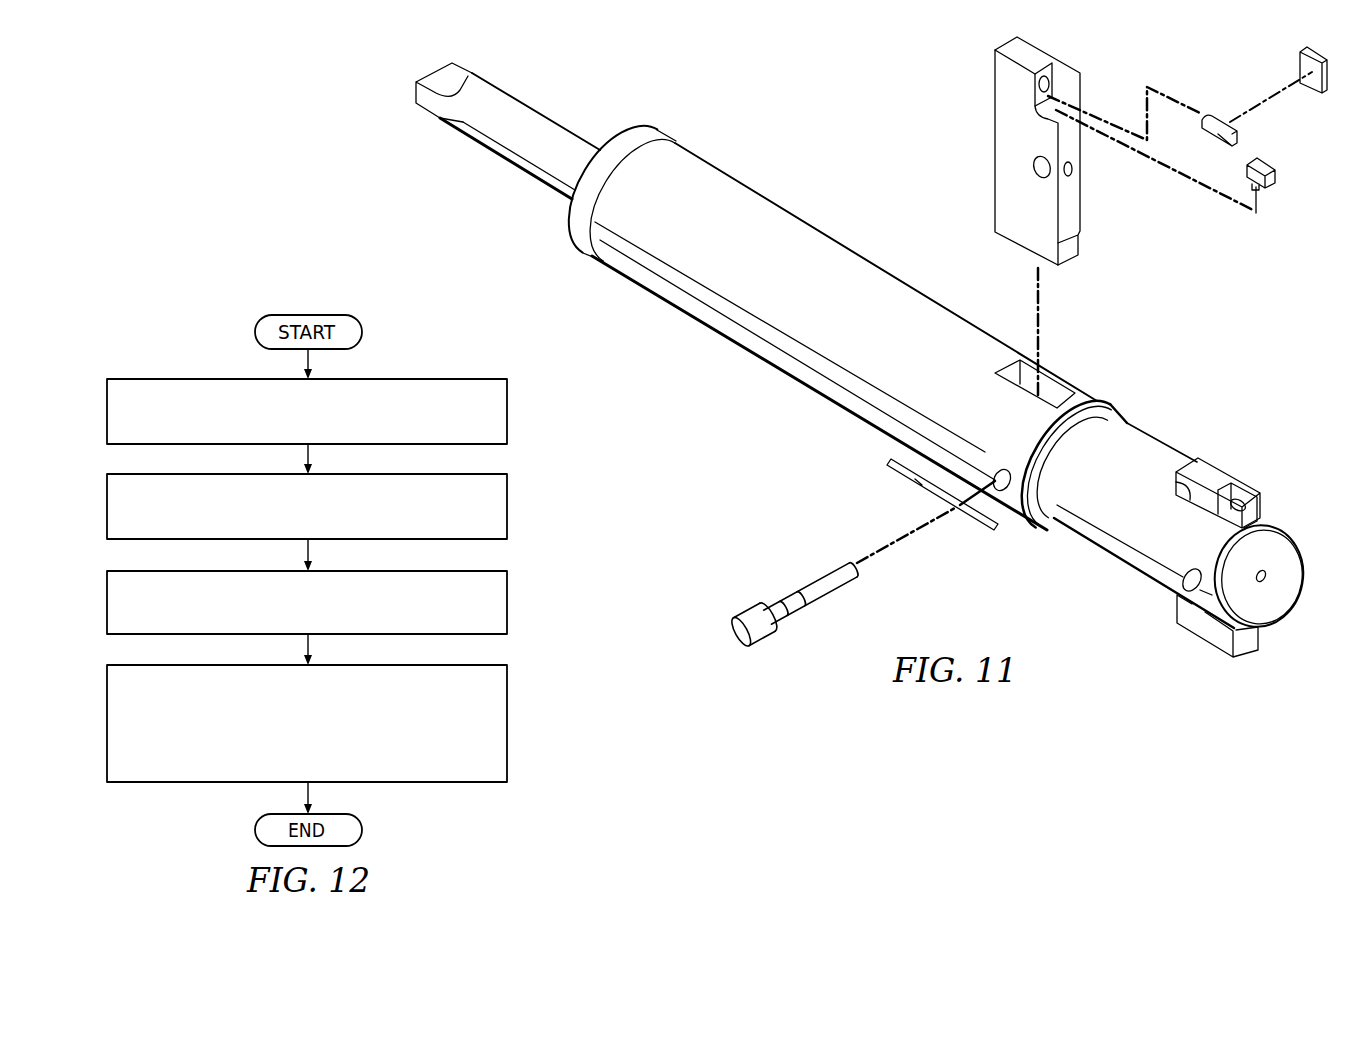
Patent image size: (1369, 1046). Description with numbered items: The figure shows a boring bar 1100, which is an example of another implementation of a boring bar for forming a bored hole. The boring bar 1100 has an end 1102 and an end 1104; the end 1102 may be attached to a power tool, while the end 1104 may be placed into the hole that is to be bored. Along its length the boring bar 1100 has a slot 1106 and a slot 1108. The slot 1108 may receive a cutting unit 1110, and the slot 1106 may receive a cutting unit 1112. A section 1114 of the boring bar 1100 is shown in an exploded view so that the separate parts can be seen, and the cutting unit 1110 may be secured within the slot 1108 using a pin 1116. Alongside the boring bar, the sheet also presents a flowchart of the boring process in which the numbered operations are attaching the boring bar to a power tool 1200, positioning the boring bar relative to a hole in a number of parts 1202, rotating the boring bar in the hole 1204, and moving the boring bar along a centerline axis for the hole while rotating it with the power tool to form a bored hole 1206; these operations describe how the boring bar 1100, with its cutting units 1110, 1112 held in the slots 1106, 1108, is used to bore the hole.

In FIG. 11, the boring bar 1100 is at (426, 190).
In FIG. 11, the end 1102 is at (416, 90).
In FIG. 11, the end 1104 is at (1284, 589).
In FIG. 11, the slot 1106 is at (1176, 480).
In FIG. 11, the slot 1108 is at (1058, 397).
In FIG. 11, the cutting unit 1110 is at (1012, 118).
In FIG. 11, the cutting unit 1112 is at (1218, 478).
In FIG. 11, the section 1114 is at (918, 488).
In FIG. 11, the pin 1116 is at (803, 607).
In FIG. 12, the attach the boring bar to a power tool 1200 is at (107, 411).
In FIG. 12, the position the boring bar relative to a hole in a number of parts 1202 is at (107, 508).
In FIG. 12, the rotate the boring bar in the hole 1204 is at (107, 602).
In FIG. 12, the move the boring bar along a centerline axis for the hole while rotating the bori 1206 is at (107, 723).